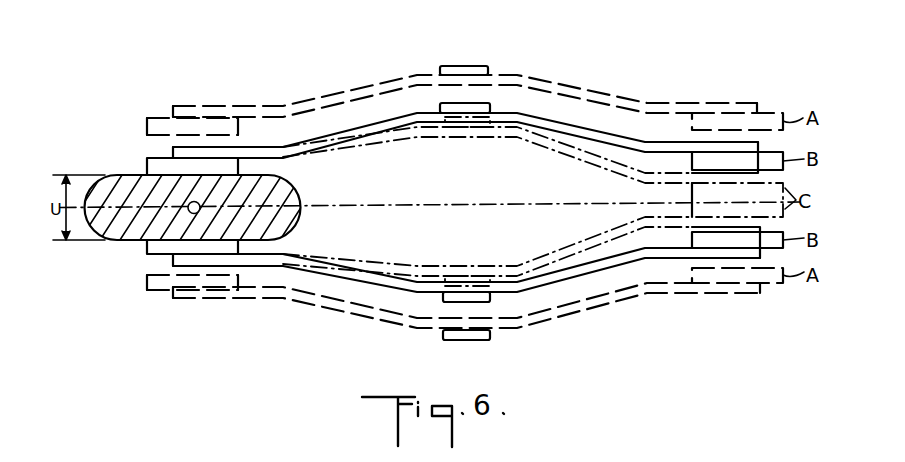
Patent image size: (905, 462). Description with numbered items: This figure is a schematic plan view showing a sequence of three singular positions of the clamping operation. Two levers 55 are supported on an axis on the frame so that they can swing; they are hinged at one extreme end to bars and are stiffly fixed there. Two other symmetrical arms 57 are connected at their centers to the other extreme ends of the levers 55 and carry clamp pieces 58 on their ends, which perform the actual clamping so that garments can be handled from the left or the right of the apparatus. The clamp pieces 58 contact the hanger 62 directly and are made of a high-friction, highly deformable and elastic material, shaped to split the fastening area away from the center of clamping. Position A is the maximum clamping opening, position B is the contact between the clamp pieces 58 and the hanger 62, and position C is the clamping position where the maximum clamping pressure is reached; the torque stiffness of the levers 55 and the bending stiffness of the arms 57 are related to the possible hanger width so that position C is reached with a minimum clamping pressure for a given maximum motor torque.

The levers 55 is at (478, 65).
The symmetrical arms 57 is at (403, 77).
The clamp pieces 58 is at (143, 158).
The hanger 62 is at (107, 176).